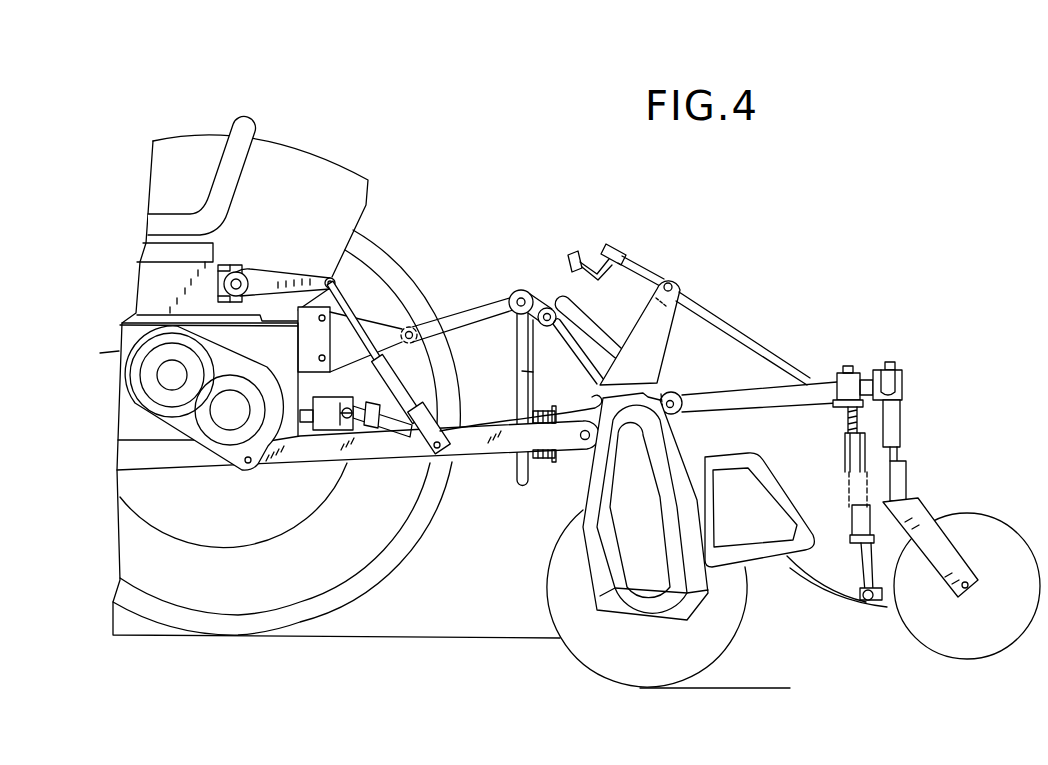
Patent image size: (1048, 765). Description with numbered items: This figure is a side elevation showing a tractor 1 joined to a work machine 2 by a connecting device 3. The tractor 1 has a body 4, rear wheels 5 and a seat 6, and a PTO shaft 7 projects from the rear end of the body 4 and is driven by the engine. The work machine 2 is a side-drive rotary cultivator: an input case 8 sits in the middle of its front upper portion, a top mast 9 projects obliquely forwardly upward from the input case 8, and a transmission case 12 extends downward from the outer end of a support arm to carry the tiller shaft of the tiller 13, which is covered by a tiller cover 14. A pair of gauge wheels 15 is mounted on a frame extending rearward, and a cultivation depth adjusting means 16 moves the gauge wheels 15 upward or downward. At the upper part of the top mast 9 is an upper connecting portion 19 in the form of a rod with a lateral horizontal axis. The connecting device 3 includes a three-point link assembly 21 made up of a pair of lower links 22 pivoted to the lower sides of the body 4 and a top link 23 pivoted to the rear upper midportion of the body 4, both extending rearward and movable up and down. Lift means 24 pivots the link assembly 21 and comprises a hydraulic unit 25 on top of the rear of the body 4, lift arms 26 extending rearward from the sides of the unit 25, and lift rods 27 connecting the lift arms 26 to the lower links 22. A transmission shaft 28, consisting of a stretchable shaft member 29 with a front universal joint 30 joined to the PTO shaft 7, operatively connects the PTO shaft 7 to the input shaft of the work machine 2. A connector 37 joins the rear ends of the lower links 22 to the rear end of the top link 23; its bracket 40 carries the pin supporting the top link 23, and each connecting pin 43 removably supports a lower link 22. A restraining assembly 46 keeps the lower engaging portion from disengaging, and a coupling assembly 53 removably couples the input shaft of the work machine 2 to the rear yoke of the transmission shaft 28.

The tractor 1 is at (319, 333).
The work machine 2 is at (808, 407).
The connecting device 3 is at (505, 209).
The tractor body 4 is at (125, 345).
The rear wheels 5 is at (363, 555).
The seat 6 is at (252, 130).
The PTO shaft 7 is at (307, 417).
The input case 8 is at (660, 392).
The top mast 9 is at (590, 343).
The transmission case 12 is at (725, 583).
The tiller 13 is at (733, 638).
The tiller cover 14 is at (785, 502).
The gauge wheels 15 is at (1010, 530).
The cultivation depth adjusting means 16 is at (737, 333).
The upper connecting portion 19 is at (547, 307).
The three-point link assembly 21 is at (468, 460).
The lower links 22 is at (487, 430).
The top link 23 is at (490, 306).
The lift means 24 is at (321, 259).
The hydraulic unit 25 is at (147, 292).
The lift arms 26 is at (287, 282).
The lift rods 27 is at (360, 330).
The transmission shaft 28 is at (393, 434).
The stretchable shaft member 29 is at (385, 420).
The front universal joint 30 is at (327, 420).
The connector 37 is at (543, 399).
The bracket 40 is at (530, 290).
The connecting pin 43 is at (583, 440).
The restraining assembly 46 is at (618, 363).
The coupling assembly 53 is at (538, 463).